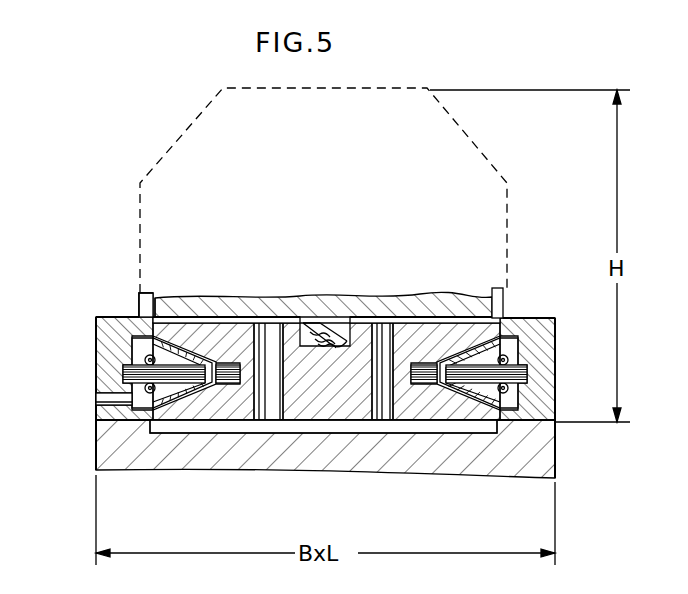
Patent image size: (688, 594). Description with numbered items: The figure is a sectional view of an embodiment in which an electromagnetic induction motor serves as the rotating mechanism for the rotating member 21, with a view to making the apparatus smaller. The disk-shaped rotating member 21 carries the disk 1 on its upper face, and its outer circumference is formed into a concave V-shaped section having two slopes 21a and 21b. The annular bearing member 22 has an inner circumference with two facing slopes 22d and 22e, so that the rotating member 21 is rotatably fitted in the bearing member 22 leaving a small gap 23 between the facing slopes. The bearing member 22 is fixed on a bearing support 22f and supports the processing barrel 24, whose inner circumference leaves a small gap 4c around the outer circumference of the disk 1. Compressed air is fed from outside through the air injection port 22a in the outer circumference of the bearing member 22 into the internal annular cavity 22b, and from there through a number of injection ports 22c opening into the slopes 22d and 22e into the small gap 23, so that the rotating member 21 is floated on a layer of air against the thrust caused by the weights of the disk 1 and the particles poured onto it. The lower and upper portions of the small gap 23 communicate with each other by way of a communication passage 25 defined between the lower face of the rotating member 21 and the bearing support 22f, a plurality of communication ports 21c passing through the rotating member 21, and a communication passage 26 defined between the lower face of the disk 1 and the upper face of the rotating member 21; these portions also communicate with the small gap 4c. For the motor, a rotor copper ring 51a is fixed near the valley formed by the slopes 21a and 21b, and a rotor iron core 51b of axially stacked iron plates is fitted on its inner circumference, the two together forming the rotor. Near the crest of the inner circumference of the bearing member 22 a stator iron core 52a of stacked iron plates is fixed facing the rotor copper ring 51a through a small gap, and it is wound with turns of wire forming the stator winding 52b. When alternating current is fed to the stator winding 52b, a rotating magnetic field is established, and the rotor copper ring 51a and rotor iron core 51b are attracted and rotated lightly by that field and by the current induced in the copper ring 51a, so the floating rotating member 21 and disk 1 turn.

The disk 1 is at (440, 308).
The small gap 4c is at (150, 301).
The rotating member 21 is at (357, 400).
The slope 21a is at (203, 322).
The slope 21b is at (268, 418).
The communication ports 21c is at (285, 408).
The bearing member 22 is at (548, 358).
The air injection port 22a is at (98, 403).
The annular cavity 22b is at (143, 348).
The injection ports 22c is at (163, 433).
The slope 22d is at (141, 292).
The slope 22e is at (180, 433).
The bearing support 22f is at (545, 466).
The small gap 23 is at (226, 384).
The processing barrel 24 is at (473, 146).
The communication passage 25 is at (343, 427).
The communication passage 26 is at (232, 317).
The rotor copper ring 51a is at (442, 396).
The rotor iron core 51b is at (425, 385).
The stator iron core 52a is at (523, 358).
The stator winding 52b is at (517, 393).